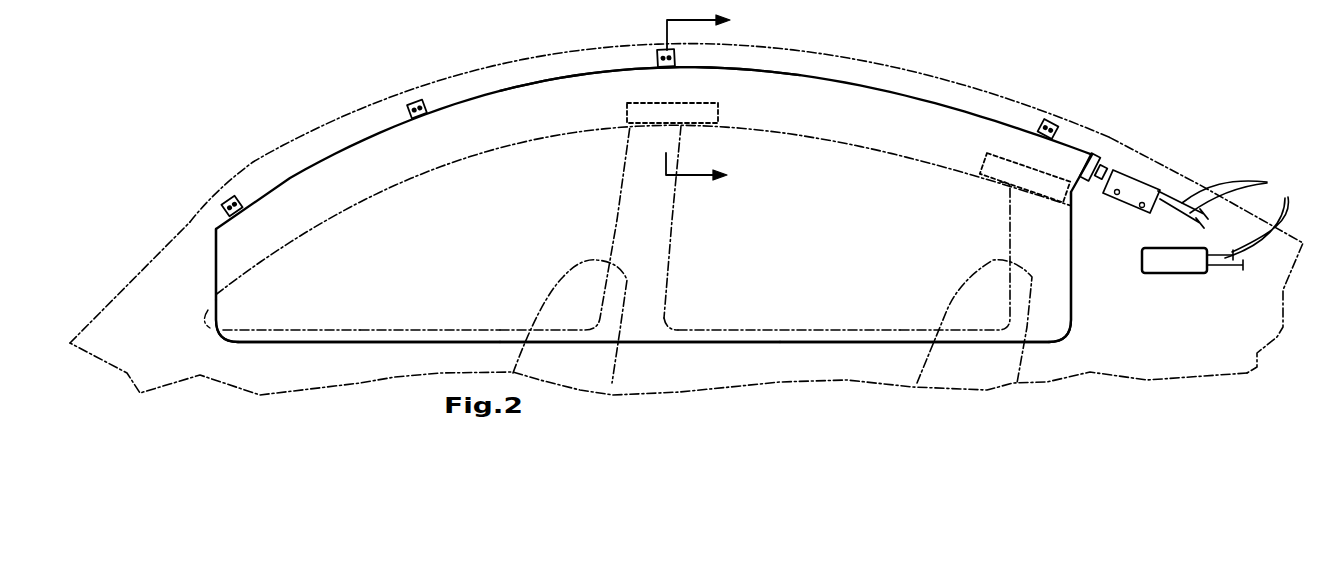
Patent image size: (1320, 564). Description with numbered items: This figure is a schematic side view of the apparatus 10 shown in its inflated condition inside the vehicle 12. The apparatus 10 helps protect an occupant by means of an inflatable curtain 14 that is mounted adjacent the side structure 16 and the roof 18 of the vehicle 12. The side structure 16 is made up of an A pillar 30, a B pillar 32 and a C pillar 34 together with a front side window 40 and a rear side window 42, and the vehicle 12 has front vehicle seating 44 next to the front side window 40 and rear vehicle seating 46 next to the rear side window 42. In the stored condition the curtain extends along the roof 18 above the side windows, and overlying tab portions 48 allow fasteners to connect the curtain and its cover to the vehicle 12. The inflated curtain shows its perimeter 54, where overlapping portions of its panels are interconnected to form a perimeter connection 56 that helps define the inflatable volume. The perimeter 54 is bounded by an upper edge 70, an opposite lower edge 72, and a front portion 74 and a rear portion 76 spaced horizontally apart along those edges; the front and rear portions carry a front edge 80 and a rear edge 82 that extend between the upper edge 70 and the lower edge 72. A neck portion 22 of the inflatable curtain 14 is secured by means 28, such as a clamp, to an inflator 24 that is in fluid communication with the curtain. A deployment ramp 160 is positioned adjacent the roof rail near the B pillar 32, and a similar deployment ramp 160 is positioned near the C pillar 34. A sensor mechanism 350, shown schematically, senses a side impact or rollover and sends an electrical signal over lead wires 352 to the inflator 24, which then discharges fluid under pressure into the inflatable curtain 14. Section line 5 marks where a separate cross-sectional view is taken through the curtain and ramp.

The section line of FIG. 5 is at (706, 97).
The apparatus 10 is at (460, 44).
The vehicle 12 is at (304, 55).
The inflatable curtain 14 is at (484, 275).
The side structure 16 is at (640, 317).
The roof 18 is at (447, 80).
The neck portion 22 is at (1093, 158).
The inflator 24 is at (1150, 193).
The means for securing the neck portion 28 is at (1100, 163).
The A pillar 30 is at (183, 272).
The B pillar 32 is at (653, 228).
The C pillar 34 is at (1110, 300).
The front side window 40 is at (410, 317).
The rear side window 42 is at (853, 317).
The front vehicle seating 44 is at (563, 280).
The rear vehicle seating 46 is at (967, 283).
The tab portions 48 is at (228, 198).
The perimeter 54 is at (307, 342).
The perimeter connection 56 is at (733, 343).
The upper edge 70 is at (555, 77).
The lower edge 72 is at (792, 343).
The front portion 74 is at (250, 300).
The rear portion 76 is at (1033, 257).
The front edge 80 is at (216, 295).
The rear edge 82 is at (1072, 272).
The deployment ramp 160 is at (640, 115).
The sensor mechanism 350 is at (1178, 262).
The lead wires 352 is at (1247, 215).